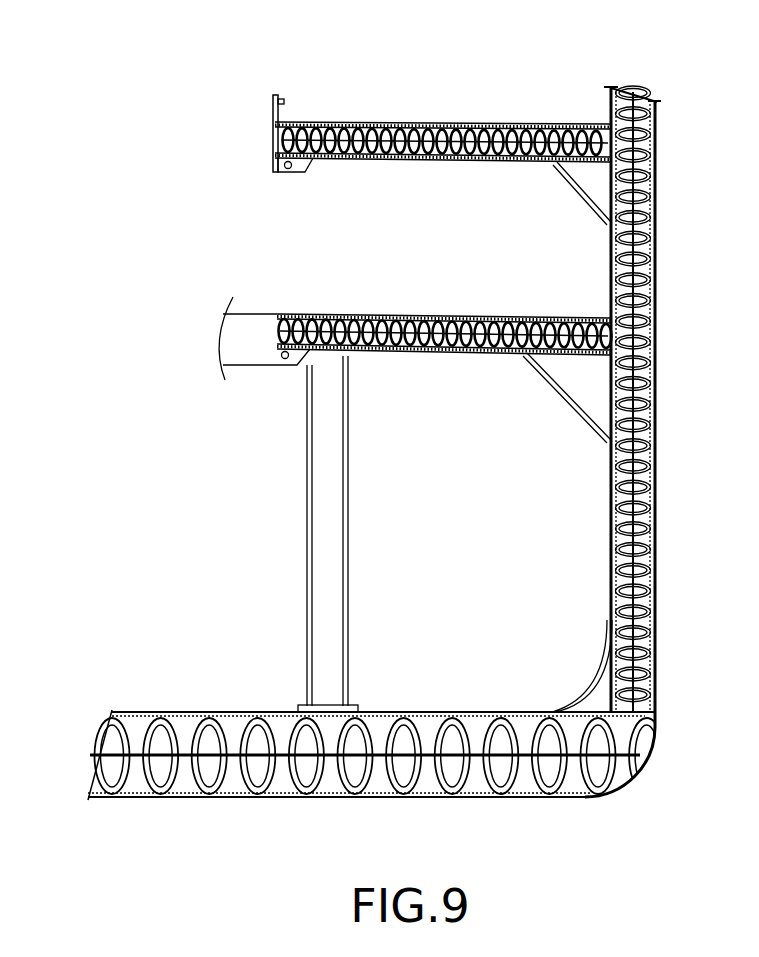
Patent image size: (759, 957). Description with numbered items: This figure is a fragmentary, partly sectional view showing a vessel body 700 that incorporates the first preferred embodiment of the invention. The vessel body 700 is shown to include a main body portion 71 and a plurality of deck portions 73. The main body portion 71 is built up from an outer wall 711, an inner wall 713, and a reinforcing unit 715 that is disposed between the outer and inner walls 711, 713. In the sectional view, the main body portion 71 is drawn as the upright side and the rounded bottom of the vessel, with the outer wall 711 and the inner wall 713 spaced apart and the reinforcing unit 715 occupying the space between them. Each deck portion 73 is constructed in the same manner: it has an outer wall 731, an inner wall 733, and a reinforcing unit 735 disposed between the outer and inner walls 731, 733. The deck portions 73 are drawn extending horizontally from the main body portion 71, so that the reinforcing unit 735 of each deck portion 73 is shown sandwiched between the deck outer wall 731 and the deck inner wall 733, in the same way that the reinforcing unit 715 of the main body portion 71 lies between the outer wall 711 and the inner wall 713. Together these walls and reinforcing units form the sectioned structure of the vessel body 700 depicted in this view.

The vessel body 700 is at (703, 122).
The main body portion 71 is at (655, 408).
The outer wall 711 is at (543, 795).
The inner wall 713 is at (425, 790).
The reinforcing unit 715 is at (470, 790).
The deck portion 73 is at (435, 123).
The outer wall 731 is at (381, 123).
The inner wall 733 is at (410, 158).
The reinforcing unit 735 is at (352, 160).